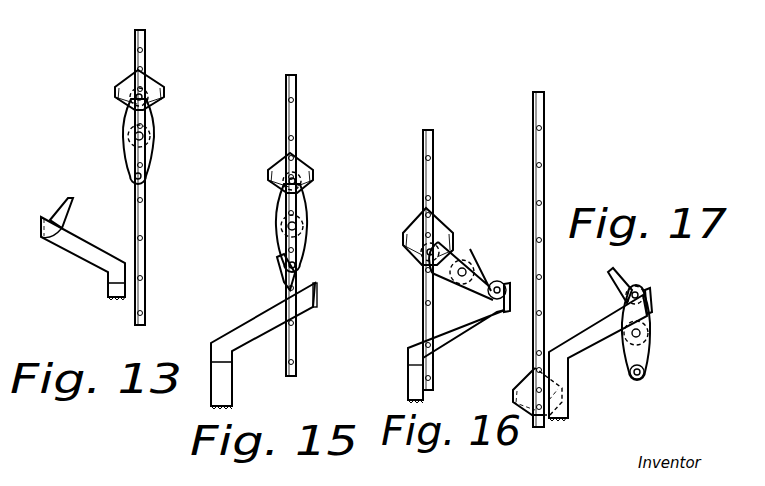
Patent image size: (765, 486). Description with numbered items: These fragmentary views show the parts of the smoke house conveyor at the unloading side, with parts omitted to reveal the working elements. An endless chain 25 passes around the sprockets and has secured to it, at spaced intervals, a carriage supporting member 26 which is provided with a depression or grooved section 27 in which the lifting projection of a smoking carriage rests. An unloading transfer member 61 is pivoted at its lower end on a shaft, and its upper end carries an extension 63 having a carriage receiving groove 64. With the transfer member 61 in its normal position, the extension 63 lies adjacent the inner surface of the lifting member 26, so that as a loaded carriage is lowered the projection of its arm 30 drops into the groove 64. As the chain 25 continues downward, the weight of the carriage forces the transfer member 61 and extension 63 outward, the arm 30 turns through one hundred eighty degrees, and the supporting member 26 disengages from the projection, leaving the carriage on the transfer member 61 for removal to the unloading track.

In FIG. 13, the endless chain 25 is at (145, 44).
In FIG. 15, the endless chain 25 is at (298, 130).
In FIG. 16, the endless chain 25 is at (434, 178).
In FIG. 17, the endless chain 25 is at (545, 178).
In FIG. 13, the carriage supporting member 26 is at (151, 80).
In FIG. 15, the carriage supporting member 26 is at (303, 170).
In FIG. 16, the carriage supporting member 26 is at (438, 226).
In FIG. 17, the carriage supporting member 26 is at (528, 388).
In FIG. 13, the grooved section 27 is at (150, 86).
In FIG. 15, the grooved section 27 is at (303, 177).
In FIG. 16, the grooved section 27 is at (447, 232).
In FIG. 13, the arm 30 is at (153, 125).
In FIG. 15, the arm 30 is at (300, 207).
In FIG. 16, the arm 30 is at (470, 276).
In FIG. 17, the arm 30 is at (644, 355).
In FIG. 13, the unloading transfer member 61 is at (110, 294).
In FIG. 15, the unloading transfer member 61 is at (215, 372).
In FIG. 13, the extension 63 is at (97, 254).
In FIG. 15, the extension 63 is at (240, 338).
In FIG. 16, the extension 63 is at (465, 320).
In FIG. 17, the extension 63 is at (582, 336).
In FIG. 13, the carriage receiving groove 64 is at (56, 216).
In FIG. 15, the carriage receiving groove 64 is at (305, 284).
In FIG. 16, the carriage receiving groove 64 is at (501, 294).
In FIG. 17, the carriage receiving groove 64 is at (645, 291).